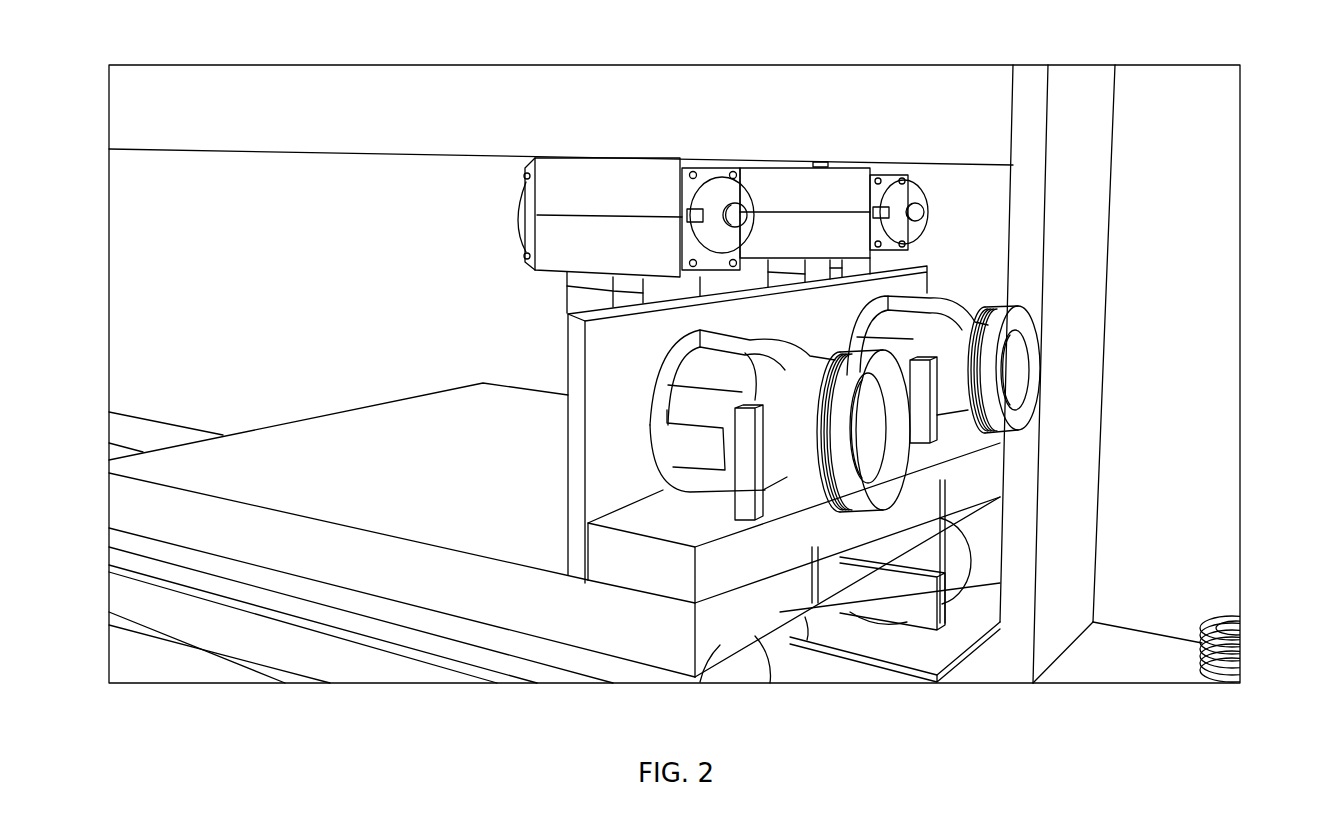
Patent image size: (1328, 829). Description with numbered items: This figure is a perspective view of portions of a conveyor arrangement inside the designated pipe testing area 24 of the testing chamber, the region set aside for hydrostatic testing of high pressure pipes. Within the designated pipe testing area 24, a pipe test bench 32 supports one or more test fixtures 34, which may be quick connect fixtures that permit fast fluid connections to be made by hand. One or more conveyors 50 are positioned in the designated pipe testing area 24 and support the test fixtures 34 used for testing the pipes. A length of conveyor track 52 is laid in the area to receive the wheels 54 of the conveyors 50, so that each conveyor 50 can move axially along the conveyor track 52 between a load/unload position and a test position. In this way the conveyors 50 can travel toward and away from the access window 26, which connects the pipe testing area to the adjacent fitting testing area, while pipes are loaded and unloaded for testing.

The designated pipe testing area 24 is at (1020, 198).
The access window 26 is at (1022, 260).
The pipe test bench 32 is at (615, 485).
The test fixture 34 is at (972, 323).
The conveyor 50 is at (398, 630).
The conveyor track 52 is at (446, 670).
The wheels 54 is at (758, 677).